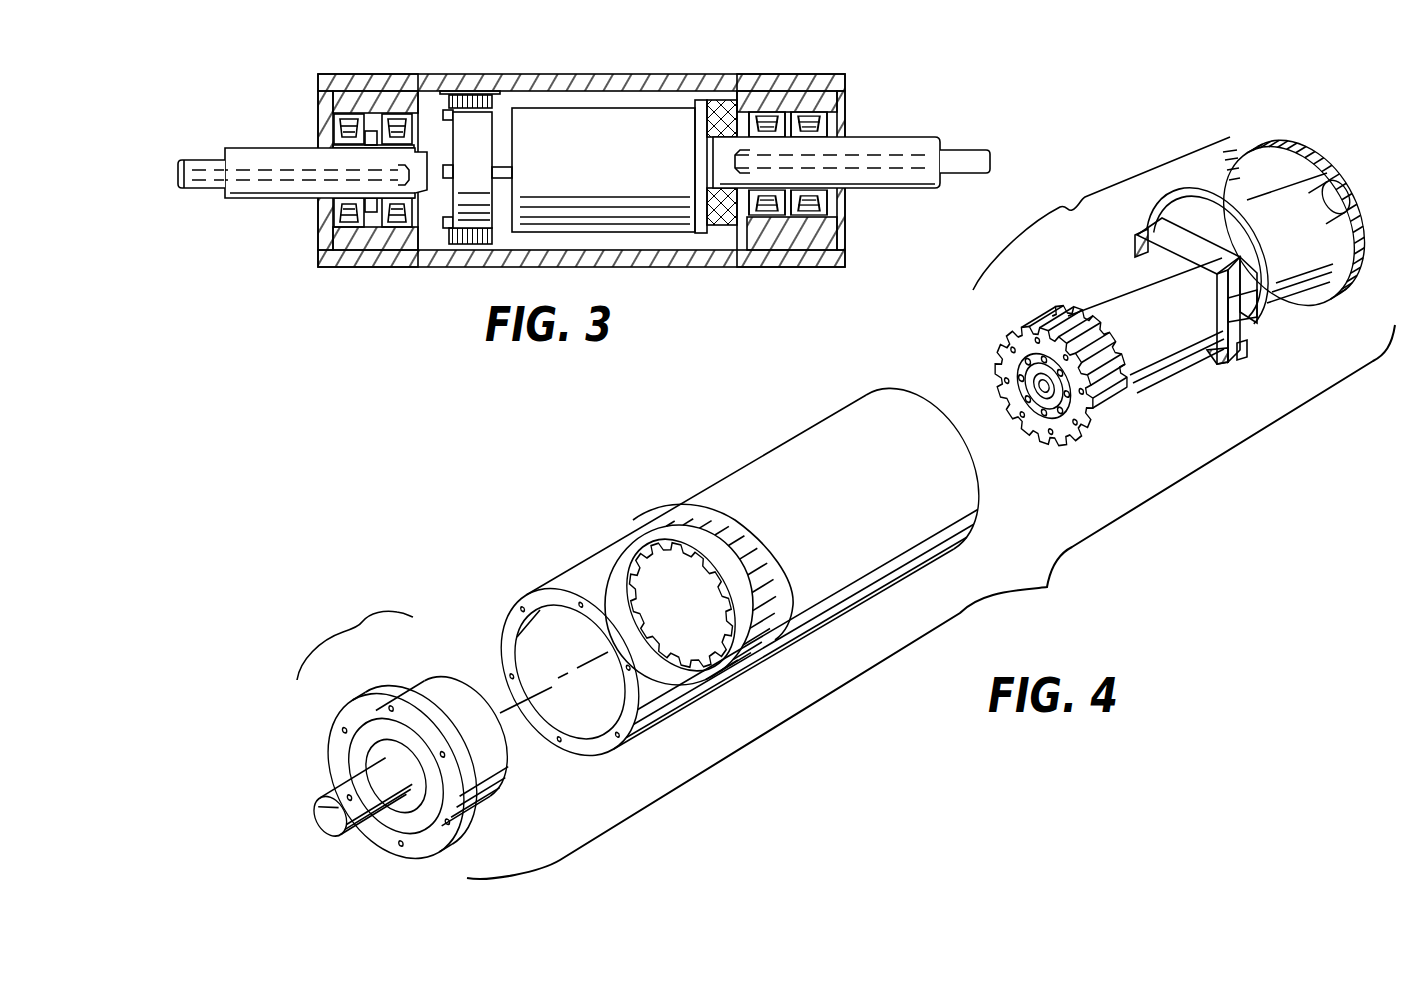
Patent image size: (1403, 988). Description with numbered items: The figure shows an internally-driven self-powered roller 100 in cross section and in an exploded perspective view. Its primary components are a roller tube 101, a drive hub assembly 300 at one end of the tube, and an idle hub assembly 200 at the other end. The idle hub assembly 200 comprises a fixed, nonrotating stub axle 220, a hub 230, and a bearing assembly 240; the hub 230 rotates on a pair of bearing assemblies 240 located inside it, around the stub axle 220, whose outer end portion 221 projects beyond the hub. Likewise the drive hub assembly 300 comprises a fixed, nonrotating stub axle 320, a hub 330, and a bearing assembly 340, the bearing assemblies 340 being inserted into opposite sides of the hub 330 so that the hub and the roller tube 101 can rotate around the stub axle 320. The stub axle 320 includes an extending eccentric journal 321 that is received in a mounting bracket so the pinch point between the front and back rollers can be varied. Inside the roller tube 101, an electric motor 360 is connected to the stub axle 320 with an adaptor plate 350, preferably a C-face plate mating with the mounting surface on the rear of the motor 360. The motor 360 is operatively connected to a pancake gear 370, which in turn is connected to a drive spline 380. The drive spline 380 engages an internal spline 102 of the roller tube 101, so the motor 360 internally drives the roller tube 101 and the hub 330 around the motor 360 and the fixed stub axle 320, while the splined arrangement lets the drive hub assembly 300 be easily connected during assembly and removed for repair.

In FIG. 4, the internally-driven self-powered roller 100 is at (931, 602).
In FIG. 3, the roller tube 101 is at (646, 74).
In FIG. 4, the roller tube 101 is at (785, 460).
In FIG. 3, the internal spline 102 is at (500, 81).
In FIG. 4, the internal spline 102 is at (670, 517).
In FIG. 4, the idle hub assembly 200 is at (355, 639).
In FIG. 3, the stub axle 220 is at (289, 152).
In FIG. 4, the stub axle 220 is at (370, 815).
In FIG. 3, the shaft end portion 221 is at (208, 192).
In FIG. 3, the hub 230 is at (317, 90).
In FIG. 4, the hub 230 is at (423, 670).
In FIG. 3, the bearing assembly 240 is at (386, 212).
In FIG. 4, the drive hub assembly 300 is at (1169, 260).
In FIG. 3, the stub axle 320 is at (900, 135).
In FIG. 4, the stub axle 320 is at (1335, 180).
In FIG. 3, the eccentric journal 321 is at (970, 147).
In FIG. 3, the hub 330 is at (848, 80).
In FIG. 4, the hub 330 is at (1152, 207).
In FIG. 3, the bearing assembly 340 is at (795, 240).
In FIG. 3, the adaptor plate 350 is at (712, 118).
In FIG. 3, the electric motor 360 is at (627, 147).
In FIG. 3, the pancake gear 370 is at (462, 150).
In FIG. 3, the drive spline 380 is at (472, 105).
In FIG. 4, the drive spline 380 is at (1032, 330).